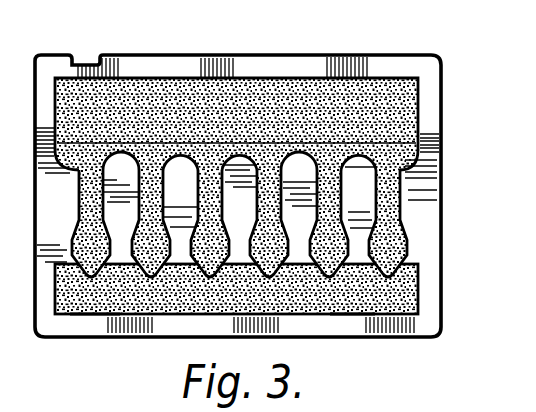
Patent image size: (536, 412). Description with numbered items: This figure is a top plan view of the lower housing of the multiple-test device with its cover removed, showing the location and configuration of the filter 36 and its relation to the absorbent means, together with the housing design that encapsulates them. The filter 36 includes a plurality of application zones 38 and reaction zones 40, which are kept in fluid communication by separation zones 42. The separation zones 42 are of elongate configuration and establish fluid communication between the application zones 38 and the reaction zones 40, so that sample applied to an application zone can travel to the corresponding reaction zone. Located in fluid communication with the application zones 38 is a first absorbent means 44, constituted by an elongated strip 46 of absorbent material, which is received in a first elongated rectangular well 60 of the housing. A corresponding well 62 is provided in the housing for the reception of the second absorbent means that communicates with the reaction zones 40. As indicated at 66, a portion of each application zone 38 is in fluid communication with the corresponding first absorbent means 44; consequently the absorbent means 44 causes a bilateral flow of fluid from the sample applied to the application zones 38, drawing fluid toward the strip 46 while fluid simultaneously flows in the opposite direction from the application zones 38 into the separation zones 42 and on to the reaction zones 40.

The filter 36 is at (372, 72).
The well 62 is at (233, 97).
The application zones 38 is at (386, 250).
The reaction zones 40 is at (326, 176).
The separation zones 42 is at (388, 208).
The first absorbent means 44 is at (432, 290).
The elongated strip 46 is at (390, 336).
The first elongated rectangular well 60 is at (352, 306).
The fluid communication portion 66 is at (95, 312).